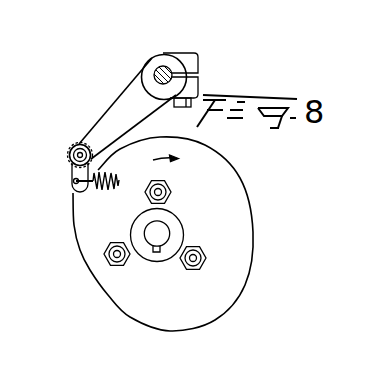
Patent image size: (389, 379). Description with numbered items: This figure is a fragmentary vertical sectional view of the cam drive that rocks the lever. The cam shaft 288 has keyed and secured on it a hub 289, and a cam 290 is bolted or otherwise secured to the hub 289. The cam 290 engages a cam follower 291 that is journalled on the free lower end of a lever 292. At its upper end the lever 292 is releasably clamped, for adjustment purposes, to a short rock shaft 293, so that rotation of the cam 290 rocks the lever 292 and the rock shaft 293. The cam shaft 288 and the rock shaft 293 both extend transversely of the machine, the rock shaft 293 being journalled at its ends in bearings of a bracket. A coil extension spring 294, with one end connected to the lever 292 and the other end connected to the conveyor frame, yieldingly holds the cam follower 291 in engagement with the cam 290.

The cam shaft 288 is at (159, 234).
The hub 289 is at (156, 248).
The cam 290 is at (212, 172).
The cam follower 291 is at (76, 144).
The lever 292 is at (116, 106).
The rock shaft 293 is at (159, 70).
The coil extension spring 294 is at (95, 192).